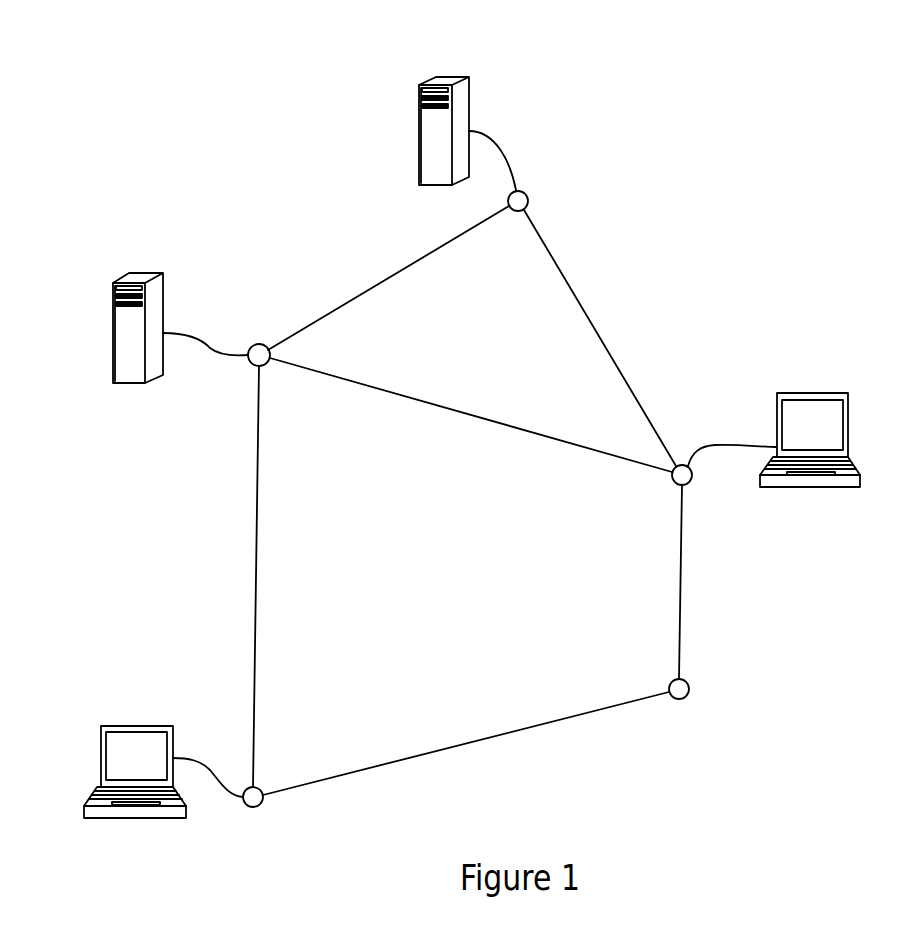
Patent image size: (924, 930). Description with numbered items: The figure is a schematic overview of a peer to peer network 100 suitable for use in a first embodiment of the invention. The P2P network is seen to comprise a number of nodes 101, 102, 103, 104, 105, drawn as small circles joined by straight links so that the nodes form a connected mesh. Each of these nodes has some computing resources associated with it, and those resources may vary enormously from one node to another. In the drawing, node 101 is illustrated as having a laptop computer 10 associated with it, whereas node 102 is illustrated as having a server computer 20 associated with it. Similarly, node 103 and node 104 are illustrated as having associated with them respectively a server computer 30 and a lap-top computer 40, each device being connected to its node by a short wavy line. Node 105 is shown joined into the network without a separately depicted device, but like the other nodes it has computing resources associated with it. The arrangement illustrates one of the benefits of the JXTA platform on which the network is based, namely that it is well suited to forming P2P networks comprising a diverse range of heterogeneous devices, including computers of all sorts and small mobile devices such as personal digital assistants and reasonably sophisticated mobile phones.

The network system 100 is at (793, 221).
The laptop computer 10 is at (120, 727).
The server computer 20 is at (148, 273).
The server computer 30 is at (442, 74).
The lap-top computer 40 is at (830, 393).
The node 101 is at (265, 790).
The node 102 is at (248, 344).
The node 103 is at (528, 198).
The node 104 is at (692, 478).
The node 105 is at (689, 684).